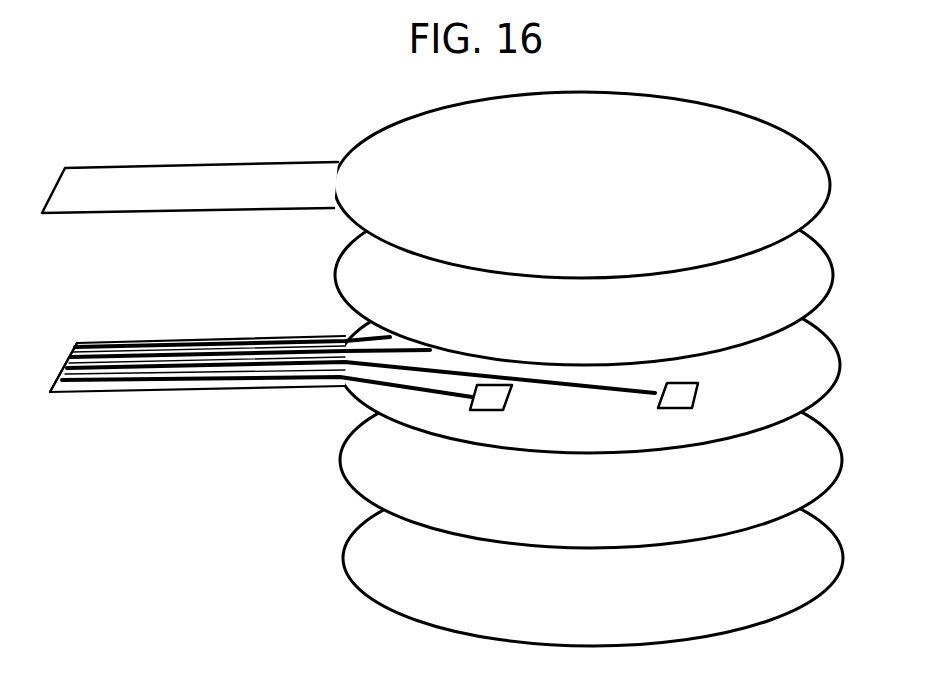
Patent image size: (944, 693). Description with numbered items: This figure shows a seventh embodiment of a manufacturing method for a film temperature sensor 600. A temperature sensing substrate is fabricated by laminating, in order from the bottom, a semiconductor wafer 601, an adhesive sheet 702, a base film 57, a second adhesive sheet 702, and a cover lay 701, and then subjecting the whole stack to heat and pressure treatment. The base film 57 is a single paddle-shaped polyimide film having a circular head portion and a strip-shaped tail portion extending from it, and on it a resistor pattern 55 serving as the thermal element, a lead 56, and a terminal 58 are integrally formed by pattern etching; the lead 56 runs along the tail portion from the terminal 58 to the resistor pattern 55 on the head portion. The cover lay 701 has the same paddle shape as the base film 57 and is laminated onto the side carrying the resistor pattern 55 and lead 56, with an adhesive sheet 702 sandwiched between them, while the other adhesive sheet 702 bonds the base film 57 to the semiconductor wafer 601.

The film temperature sensor 600 is at (449, 353).
The semiconductor wafer 601 is at (381, 607).
The cover lay 701 is at (353, 143).
The adhesive sheet 702 is at (356, 492).
The base film 57 is at (346, 387).
The lead 56 is at (168, 378).
The terminal 58 is at (66, 369).
The resistor pattern 55 is at (672, 410).